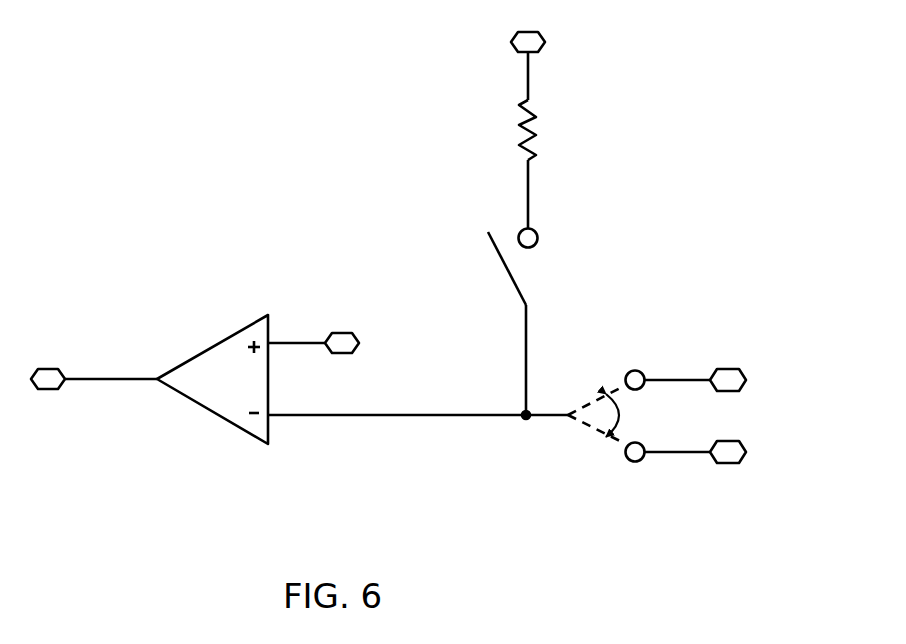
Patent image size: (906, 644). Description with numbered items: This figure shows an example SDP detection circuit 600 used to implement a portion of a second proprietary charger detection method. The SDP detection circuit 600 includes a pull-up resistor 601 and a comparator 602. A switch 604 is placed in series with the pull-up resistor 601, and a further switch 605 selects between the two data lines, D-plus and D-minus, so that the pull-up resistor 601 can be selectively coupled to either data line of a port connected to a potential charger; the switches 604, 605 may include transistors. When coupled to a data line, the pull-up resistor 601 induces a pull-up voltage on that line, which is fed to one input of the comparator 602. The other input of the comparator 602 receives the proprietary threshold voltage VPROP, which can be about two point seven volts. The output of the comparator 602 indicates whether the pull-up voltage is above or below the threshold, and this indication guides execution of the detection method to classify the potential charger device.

The SDP detection circuit 600 is at (728, 142).
The pull-up resistor 601 is at (537, 130).
The comparator 602 is at (184, 291).
The switch 604 is at (507, 263).
The switch 605 is at (581, 464).